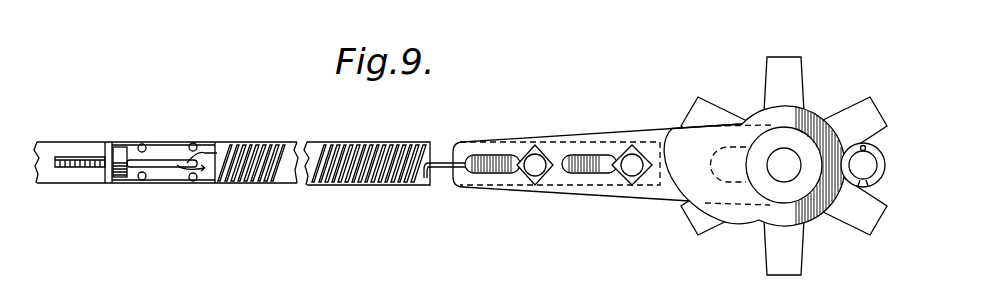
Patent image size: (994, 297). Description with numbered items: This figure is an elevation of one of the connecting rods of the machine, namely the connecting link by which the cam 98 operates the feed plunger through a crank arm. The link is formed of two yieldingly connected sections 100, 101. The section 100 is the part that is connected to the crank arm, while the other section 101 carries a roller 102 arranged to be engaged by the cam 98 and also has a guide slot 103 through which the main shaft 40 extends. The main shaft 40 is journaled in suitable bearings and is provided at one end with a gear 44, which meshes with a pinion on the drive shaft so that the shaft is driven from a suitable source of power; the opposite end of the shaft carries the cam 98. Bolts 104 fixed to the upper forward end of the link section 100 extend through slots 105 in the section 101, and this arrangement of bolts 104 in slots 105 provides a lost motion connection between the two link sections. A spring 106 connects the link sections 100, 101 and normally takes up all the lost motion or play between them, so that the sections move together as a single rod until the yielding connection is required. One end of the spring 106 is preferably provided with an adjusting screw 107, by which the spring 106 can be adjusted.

The link section 100 is at (85, 147).
The adjusting screw 107 is at (147, 165).
The spring 106 is at (333, 188).
The bolts 104 is at (620, 147).
The slots 105 is at (583, 168).
The link section 101 is at (611, 187).
The guide slot 103 is at (706, 186).
The cam 98 is at (750, 213).
The main shaft 40 is at (778, 153).
The gear 44 is at (787, 70).
The roller 102 is at (843, 146).